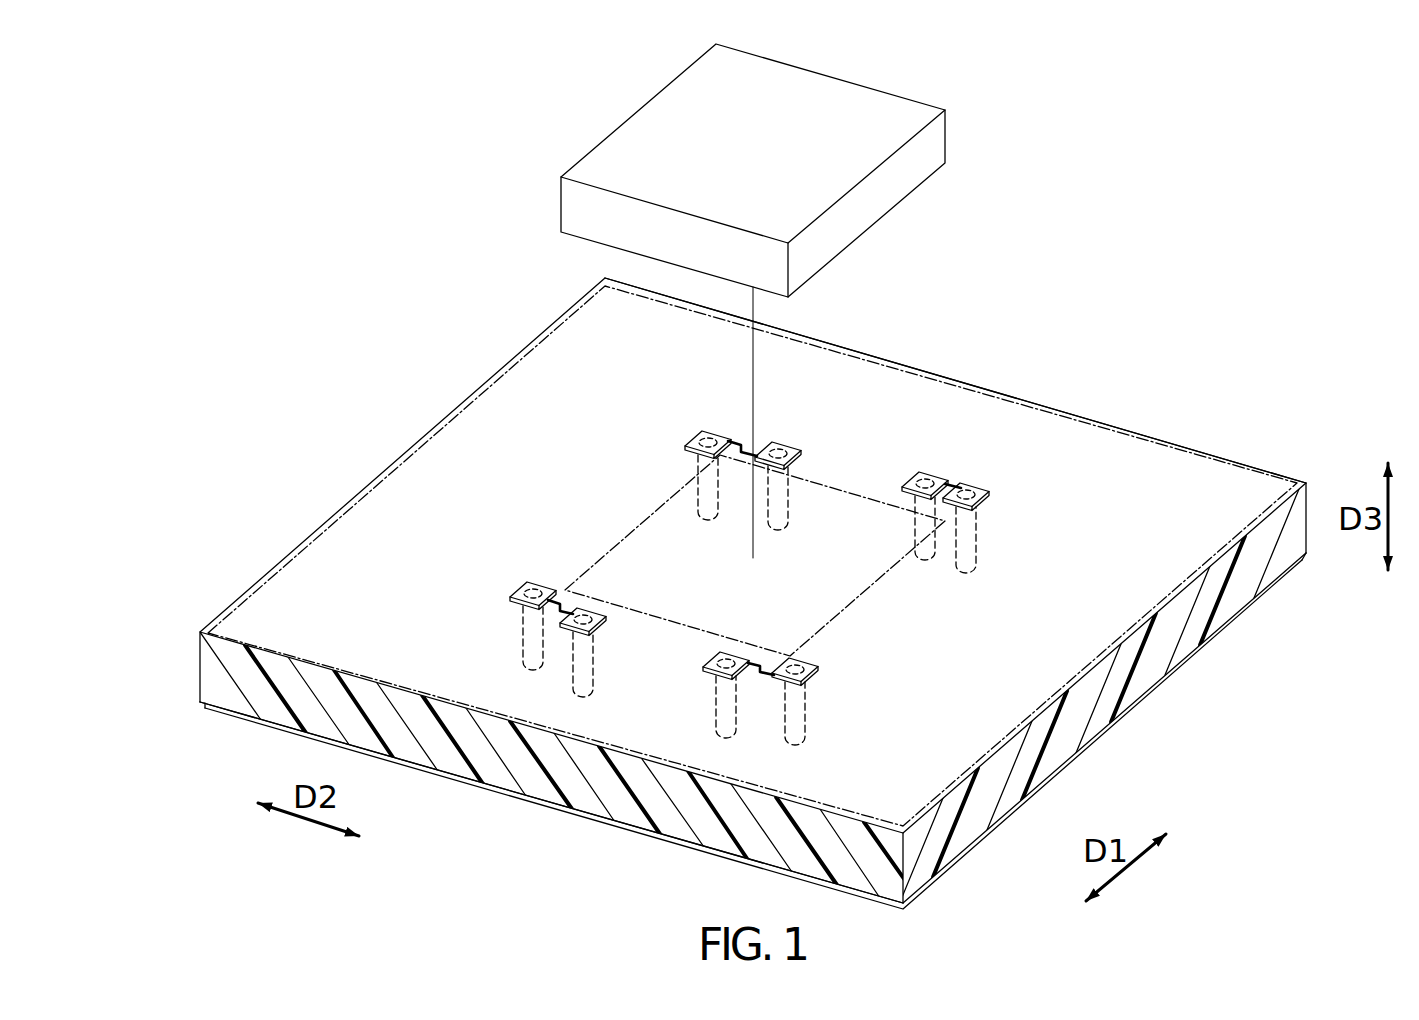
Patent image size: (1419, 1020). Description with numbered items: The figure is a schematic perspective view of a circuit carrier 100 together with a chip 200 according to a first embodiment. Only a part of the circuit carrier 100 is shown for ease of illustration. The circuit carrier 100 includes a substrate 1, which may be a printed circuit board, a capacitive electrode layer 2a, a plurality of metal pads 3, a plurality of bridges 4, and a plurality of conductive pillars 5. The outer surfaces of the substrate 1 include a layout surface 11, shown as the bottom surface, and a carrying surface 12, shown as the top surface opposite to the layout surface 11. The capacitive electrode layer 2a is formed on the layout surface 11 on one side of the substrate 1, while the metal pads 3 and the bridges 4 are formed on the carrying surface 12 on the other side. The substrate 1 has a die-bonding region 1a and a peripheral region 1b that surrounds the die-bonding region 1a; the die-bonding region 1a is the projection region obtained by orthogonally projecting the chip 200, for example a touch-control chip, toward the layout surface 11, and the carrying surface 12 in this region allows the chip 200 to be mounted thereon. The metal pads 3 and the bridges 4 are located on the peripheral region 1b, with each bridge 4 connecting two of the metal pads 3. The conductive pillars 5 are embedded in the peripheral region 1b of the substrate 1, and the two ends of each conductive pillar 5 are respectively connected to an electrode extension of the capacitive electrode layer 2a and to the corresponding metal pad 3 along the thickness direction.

The circuit carrier 100 is at (1224, 428).
The chip 200 is at (855, 90).
The substrate 1 is at (202, 667).
The die-bonding region 1a is at (636, 524).
The peripheral region 1b is at (940, 376).
The layout surface 11 is at (204, 709).
The carrying surface 12 is at (278, 609).
The capacitive electrode layer 2a is at (496, 791).
The metal pads 3 is at (690, 441).
The bridges 4 is at (742, 441).
The conductive pillars 5 is at (698, 503).